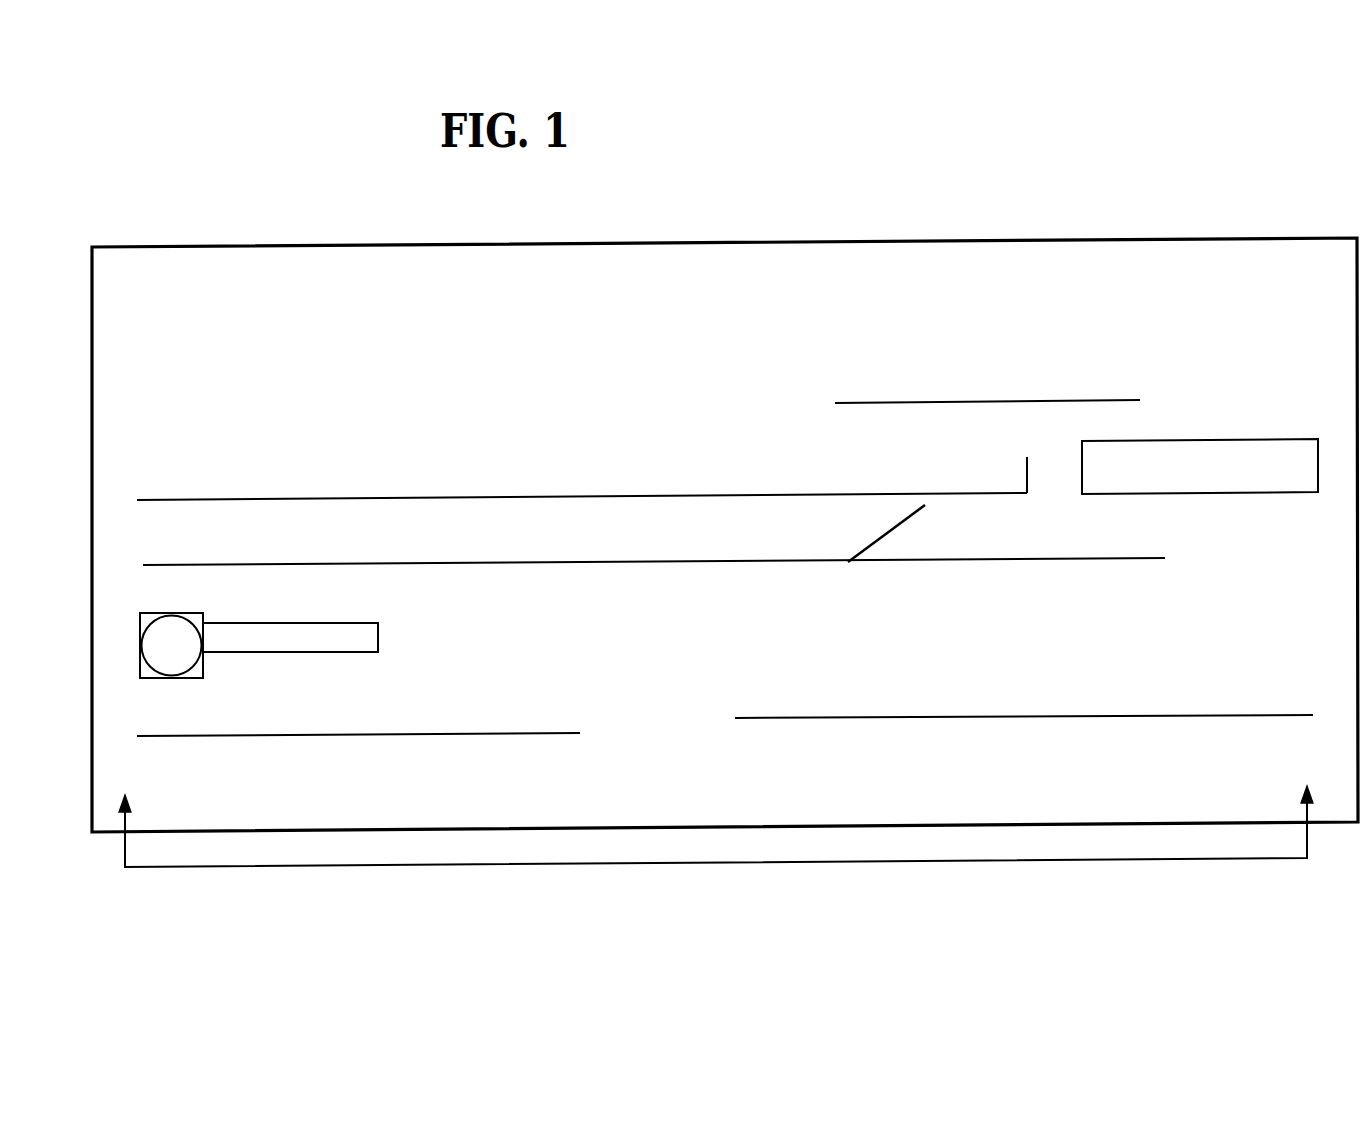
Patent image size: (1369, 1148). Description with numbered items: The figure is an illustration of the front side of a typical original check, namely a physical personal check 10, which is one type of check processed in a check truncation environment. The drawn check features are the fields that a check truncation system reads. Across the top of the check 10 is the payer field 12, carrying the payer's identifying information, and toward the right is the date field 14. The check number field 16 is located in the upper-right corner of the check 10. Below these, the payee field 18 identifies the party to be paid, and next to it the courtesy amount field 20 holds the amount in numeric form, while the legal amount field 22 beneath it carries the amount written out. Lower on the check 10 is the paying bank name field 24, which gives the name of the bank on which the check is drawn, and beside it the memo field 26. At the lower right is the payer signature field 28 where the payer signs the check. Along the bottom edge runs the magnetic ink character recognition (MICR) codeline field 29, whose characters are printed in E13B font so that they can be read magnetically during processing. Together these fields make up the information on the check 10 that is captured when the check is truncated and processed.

The personal check 10 is at (1017, 183).
The payer field 12 is at (268, 330).
The date field 14 is at (937, 348).
The check number field 16 is at (1245, 310).
The payee field 18 is at (548, 435).
The courtesy amount field 20 is at (1238, 438).
The legal amount field 22 is at (917, 565).
The paying bank name field 24 is at (267, 625).
The memo field 26 is at (135, 722).
The payer signature field 28 is at (1075, 646).
The magnetic ink character recognition (MICR) codeline field 29 is at (718, 862).